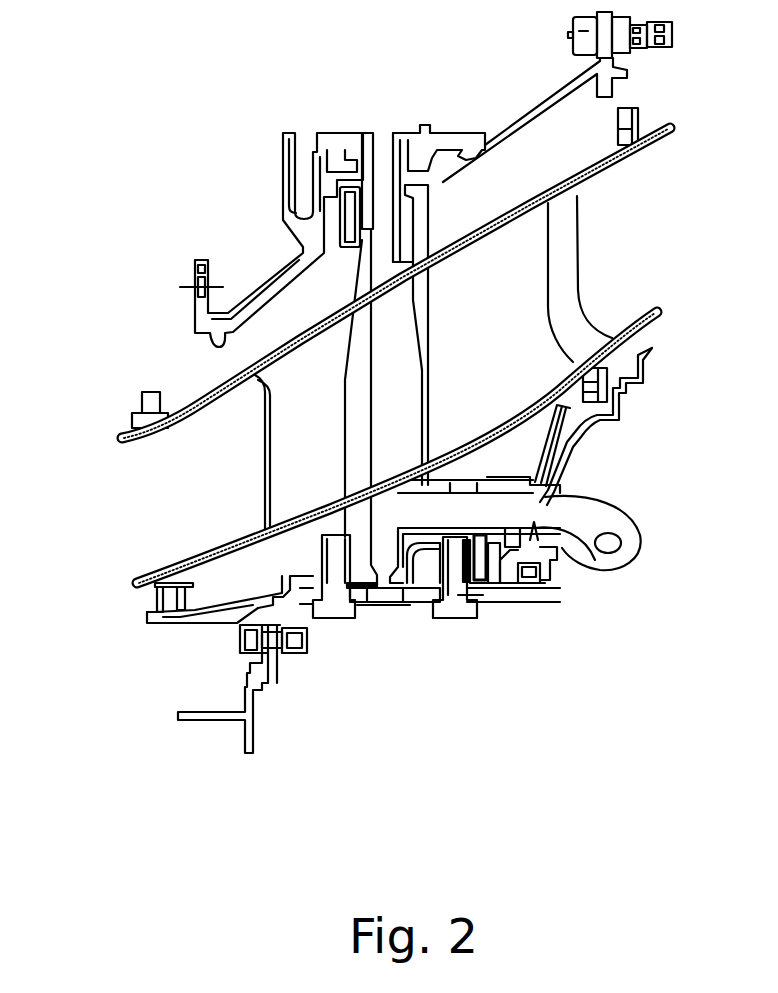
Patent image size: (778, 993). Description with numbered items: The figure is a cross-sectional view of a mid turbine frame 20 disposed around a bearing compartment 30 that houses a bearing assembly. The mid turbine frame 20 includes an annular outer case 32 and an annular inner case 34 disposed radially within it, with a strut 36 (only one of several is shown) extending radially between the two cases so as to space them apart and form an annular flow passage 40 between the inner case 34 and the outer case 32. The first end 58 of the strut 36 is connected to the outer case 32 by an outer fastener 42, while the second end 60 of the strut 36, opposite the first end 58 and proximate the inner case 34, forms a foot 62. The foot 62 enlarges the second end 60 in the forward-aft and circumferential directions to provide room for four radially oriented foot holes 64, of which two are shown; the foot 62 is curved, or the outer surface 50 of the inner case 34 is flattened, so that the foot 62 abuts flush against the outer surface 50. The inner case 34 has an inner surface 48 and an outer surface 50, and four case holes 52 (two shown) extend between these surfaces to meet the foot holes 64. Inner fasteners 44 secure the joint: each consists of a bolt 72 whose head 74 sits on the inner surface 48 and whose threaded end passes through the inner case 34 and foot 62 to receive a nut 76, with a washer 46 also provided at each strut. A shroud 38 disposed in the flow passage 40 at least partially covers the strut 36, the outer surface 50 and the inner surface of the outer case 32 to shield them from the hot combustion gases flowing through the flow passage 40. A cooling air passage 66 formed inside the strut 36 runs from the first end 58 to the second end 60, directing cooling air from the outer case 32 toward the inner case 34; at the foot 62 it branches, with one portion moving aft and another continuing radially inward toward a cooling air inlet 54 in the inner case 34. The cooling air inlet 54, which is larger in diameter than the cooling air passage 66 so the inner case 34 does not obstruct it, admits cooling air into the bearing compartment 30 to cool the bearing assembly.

The mid turbine frame 20 is at (130, 90).
The bearing compartment 30 is at (459, 744).
The annular outer case 32 is at (537, 114).
The annular inner case 34 is at (493, 603).
The strut 36 is at (427, 366).
The shroud 38 is at (560, 266).
The flow passage 40 is at (642, 289).
The outer fastener 42 is at (332, 131).
The inner fasteners 44 is at (456, 553).
The washer 46 is at (367, 608).
The inner surface 48 is at (490, 608).
The outer surface 50 is at (298, 588).
The case holes 52 is at (293, 590).
The cooling air inlet 54 is at (386, 596).
The first end 58 is at (362, 252).
The second end 60 is at (358, 553).
The foot 62 is at (305, 555).
The foot holes 64 is at (312, 565).
The cooling air passage 66 is at (399, 418).
The bolt 72 is at (490, 596).
The head 74 is at (463, 620).
The nut 76 is at (486, 598).